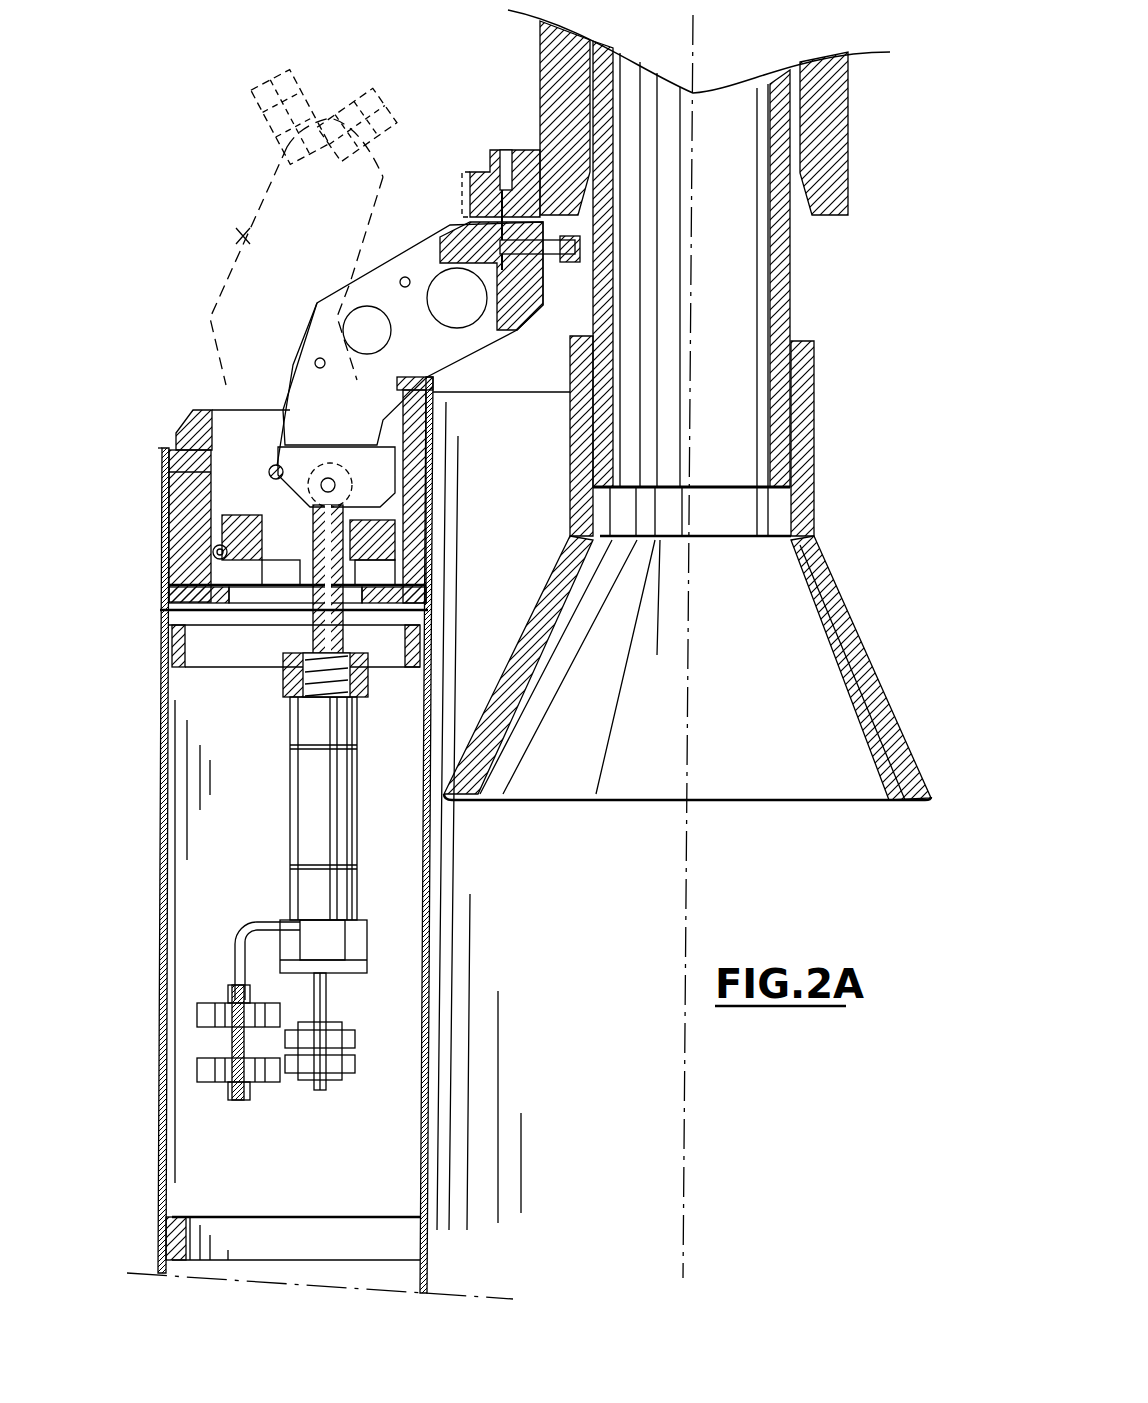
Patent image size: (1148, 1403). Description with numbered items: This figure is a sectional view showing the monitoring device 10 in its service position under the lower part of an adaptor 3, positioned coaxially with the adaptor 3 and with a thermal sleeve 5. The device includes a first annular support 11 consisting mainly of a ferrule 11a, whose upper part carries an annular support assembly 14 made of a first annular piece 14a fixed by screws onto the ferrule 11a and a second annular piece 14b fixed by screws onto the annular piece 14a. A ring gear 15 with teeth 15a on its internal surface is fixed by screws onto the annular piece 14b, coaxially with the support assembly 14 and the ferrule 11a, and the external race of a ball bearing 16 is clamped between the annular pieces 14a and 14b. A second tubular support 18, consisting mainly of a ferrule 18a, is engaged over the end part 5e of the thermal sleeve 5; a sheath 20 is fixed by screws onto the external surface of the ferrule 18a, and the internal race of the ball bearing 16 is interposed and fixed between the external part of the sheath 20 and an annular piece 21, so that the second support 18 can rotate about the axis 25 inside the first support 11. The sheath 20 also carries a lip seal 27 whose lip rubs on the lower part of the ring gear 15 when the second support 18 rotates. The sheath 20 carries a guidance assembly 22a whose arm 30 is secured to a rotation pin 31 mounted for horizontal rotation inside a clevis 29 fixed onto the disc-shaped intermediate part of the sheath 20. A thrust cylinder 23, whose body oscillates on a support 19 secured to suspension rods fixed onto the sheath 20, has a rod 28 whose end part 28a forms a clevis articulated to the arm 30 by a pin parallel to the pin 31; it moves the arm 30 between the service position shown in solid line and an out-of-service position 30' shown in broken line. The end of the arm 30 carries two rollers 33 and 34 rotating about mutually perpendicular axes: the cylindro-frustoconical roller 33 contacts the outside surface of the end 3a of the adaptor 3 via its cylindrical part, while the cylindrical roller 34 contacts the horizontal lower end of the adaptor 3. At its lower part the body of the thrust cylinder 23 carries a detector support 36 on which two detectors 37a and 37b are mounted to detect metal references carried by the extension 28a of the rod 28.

The adaptor 3 is at (858, 188).
The end of the adaptor 3a is at (832, 133).
The thermal sleeve 5 is at (792, 322).
The end part of the thermal sleeve 5e is at (840, 621).
The monitoring device 10 is at (570, 1166).
The first annular support 11 is at (160, 1027).
The ferrule 11a is at (157, 958).
The annular support assembly 14 is at (170, 448).
The first annular piece 14a is at (167, 578).
The second annular piece 14b is at (167, 472).
The ring gear 15 is at (183, 420).
The teeth 15a is at (255, 455).
The ball bearing 16 is at (165, 552).
The second tubular support 18 is at (458, 954).
The ferrule 18a is at (435, 822).
The support 19 is at (283, 685).
The sheath 20 is at (428, 500).
The annular piece 21 is at (246, 590).
The guidance assembly with pivoting arm 22a is at (254, 165).
The thrust cylinder 23 is at (317, 783).
The axis 25 is at (680, 1071).
The lip seal 27 is at (165, 498).
The rod 28 is at (345, 620).
The end part of the rod 28a is at (427, 555).
The clevis 29 is at (165, 522).
The arm 30 is at (410, 332).
The out-of-service position of the arm 30' is at (284, 251).
The rotation pin 31 is at (275, 464).
The roller 33 is at (482, 168).
The roller 34 is at (560, 289).
The detector support 36 is at (242, 927).
The detector 37a is at (204, 1006).
The detector 37b is at (266, 1084).